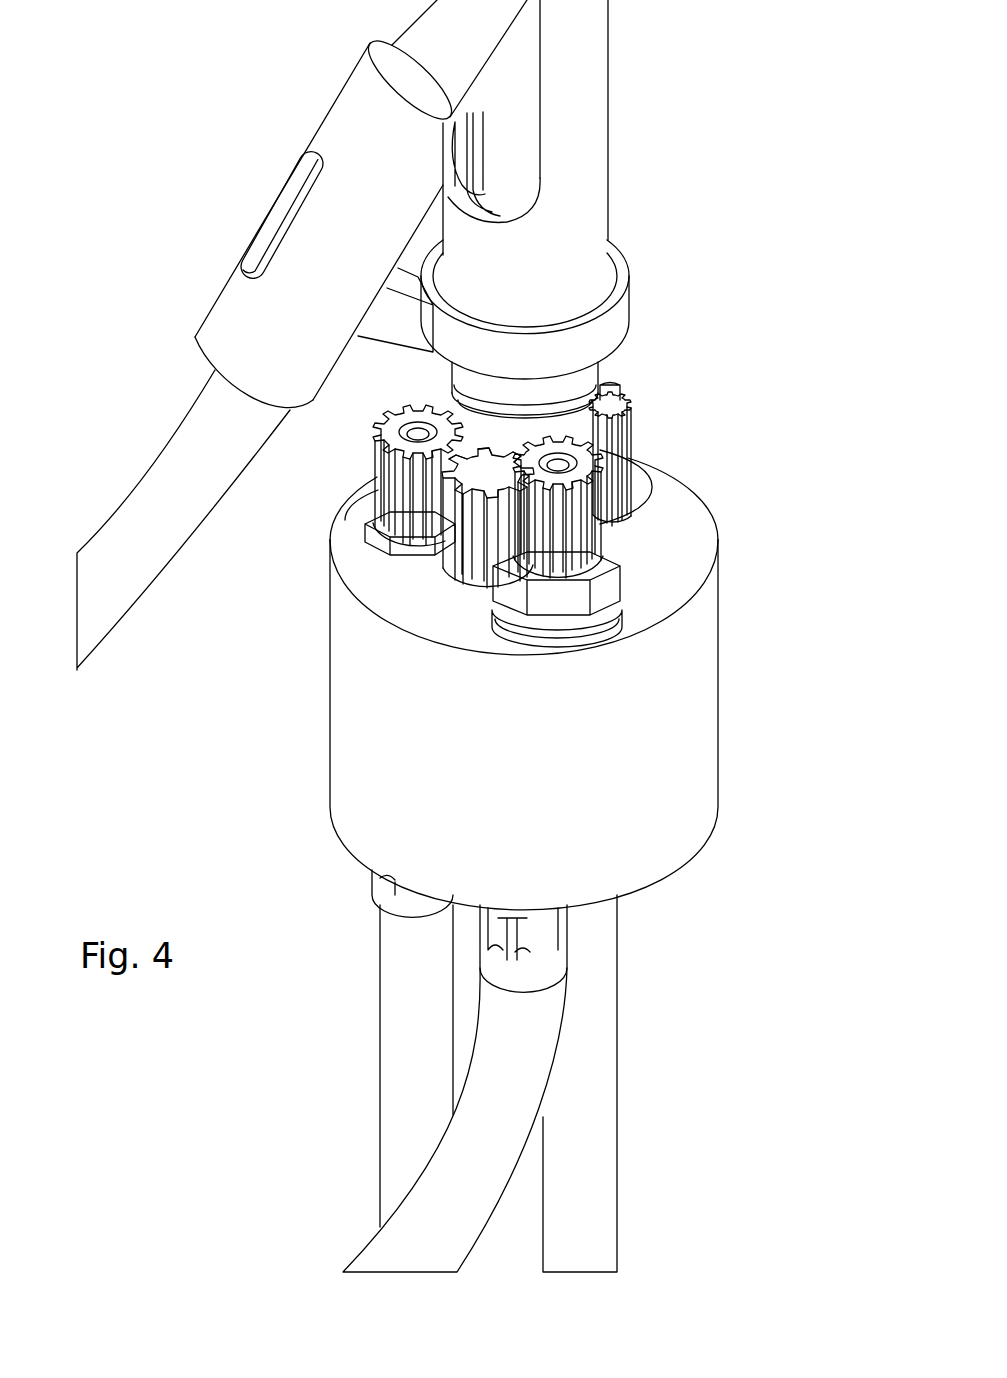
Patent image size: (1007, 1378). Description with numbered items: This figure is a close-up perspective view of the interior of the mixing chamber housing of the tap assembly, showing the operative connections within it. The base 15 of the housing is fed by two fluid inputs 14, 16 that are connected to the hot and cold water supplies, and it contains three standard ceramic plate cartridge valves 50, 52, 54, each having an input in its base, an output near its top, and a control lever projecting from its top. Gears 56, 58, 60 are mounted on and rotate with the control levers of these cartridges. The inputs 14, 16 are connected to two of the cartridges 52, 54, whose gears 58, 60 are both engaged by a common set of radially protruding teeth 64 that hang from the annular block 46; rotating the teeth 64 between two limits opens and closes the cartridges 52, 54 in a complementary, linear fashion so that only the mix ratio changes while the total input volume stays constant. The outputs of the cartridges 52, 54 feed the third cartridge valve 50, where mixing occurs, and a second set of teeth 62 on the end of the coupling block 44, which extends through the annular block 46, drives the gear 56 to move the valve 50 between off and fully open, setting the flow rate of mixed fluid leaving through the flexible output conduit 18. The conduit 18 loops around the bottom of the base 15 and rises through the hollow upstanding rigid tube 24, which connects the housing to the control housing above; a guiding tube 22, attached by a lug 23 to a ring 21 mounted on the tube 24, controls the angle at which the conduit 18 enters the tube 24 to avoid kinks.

The fluid input 14 is at (602, 1047).
The base 15 is at (705, 795).
The fluid input 16 is at (402, 1040).
The output conduit 18 is at (495, 1147).
The ring 21 is at (615, 317).
The guiding tube 22 is at (230, 328).
The lug 23 is at (405, 322).
The upstanding rigid tube 24 is at (590, 110).
The coupling block 44 is at (497, 460).
The annular block 46 is at (460, 400).
The cartridge valve 50 is at (580, 612).
The cartridge valve 52 is at (625, 490).
The cartridge valve 54 is at (386, 526).
The gear 56 is at (607, 513).
The gear 58 is at (627, 413).
The gear 60 is at (383, 467).
The radially protruding teeth 62 is at (615, 383).
The radially protruding teeth 64 is at (478, 545).